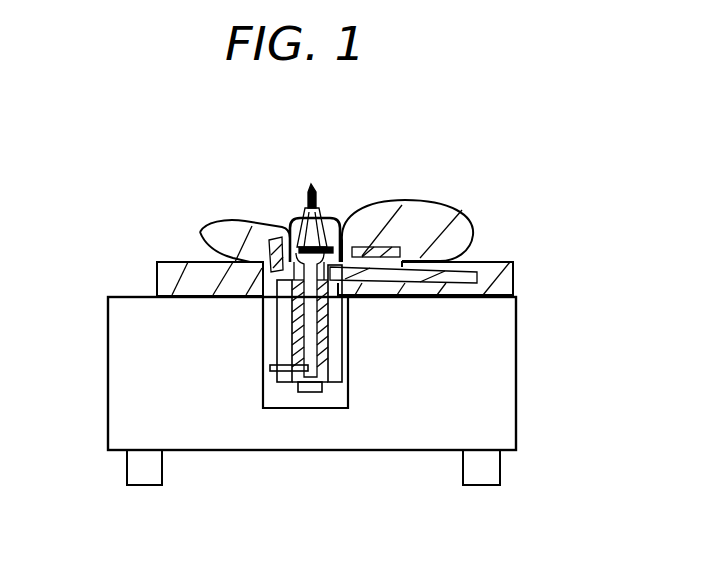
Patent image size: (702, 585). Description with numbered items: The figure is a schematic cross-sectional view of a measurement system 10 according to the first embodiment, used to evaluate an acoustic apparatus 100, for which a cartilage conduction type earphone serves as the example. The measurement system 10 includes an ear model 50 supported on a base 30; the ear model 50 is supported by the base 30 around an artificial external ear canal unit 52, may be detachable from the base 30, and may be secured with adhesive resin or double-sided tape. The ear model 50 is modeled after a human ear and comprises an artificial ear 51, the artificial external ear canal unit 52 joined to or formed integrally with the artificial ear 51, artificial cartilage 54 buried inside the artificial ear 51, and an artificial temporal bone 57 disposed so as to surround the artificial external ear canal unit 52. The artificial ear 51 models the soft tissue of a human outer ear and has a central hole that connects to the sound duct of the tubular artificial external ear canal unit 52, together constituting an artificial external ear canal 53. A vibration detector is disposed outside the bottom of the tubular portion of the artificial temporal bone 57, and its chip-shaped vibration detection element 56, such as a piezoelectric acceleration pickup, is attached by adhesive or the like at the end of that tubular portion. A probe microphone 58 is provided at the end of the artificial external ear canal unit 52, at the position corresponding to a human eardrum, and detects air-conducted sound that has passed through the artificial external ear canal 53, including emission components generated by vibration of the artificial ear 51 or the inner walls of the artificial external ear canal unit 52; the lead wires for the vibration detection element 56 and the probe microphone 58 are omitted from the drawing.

The measurement system 10 is at (325, 509).
The base 30 is at (140, 385).
The ear model 50 is at (187, 290).
The artificial ear 51 is at (440, 224).
The artificial external ear canal unit 52 is at (320, 320).
The artificial external ear canal 53 is at (290, 335).
The artificial cartilage 54 is at (270, 245).
The vibration detection element 56 is at (308, 390).
The artificial temporal bone 57 is at (330, 350).
The probe microphone 58 is at (277, 370).
The acoustic apparatus 100 is at (311, 183).